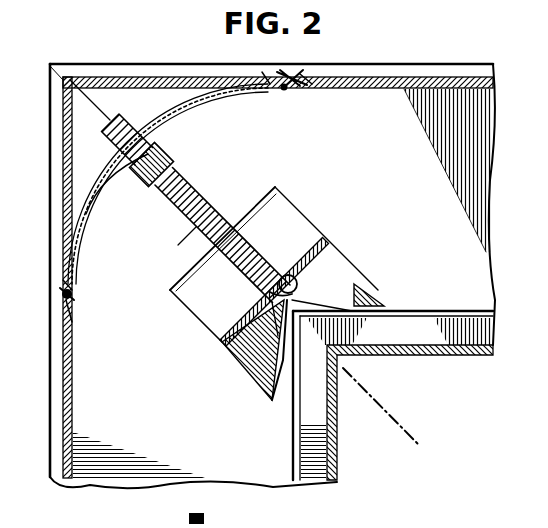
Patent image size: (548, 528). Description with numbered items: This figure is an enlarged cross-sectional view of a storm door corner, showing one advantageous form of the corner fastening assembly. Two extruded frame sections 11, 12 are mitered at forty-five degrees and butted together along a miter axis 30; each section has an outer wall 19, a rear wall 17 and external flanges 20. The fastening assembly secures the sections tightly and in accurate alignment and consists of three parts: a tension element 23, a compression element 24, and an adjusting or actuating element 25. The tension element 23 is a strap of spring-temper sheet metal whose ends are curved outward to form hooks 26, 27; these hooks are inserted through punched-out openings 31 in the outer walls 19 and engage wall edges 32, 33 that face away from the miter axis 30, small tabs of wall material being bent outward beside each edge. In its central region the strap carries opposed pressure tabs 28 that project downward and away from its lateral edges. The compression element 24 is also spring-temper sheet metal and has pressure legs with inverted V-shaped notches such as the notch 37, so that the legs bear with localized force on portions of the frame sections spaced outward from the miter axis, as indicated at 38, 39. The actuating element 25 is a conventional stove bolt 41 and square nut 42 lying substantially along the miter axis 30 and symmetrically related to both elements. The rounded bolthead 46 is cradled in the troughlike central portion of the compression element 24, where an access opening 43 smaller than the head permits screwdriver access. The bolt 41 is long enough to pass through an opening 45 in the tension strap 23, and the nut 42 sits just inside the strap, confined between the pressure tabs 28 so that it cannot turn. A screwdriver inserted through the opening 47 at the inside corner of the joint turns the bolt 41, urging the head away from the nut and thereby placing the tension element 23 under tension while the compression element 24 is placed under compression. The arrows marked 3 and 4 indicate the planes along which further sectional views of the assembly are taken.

The section line 3- 3 is at (32, 52).
The section line 4- 4 is at (228, 208).
The frame section 11 is at (352, 172).
The frame section 12 is at (140, 390).
The rear wall 17 is at (474, 267).
The outer wall 19 is at (73, 411).
The external flange 20 is at (432, 75).
The tension element 23 is at (203, 101).
The compression element 24 is at (333, 269).
The actuating element 25 is at (199, 182).
The hook 26 is at (66, 296).
The hook 27 is at (283, 87).
The pressure tab 28 is at (132, 190).
The miter axis 30 is at (398, 418).
The opening 31 is at (307, 71).
The wall edge 32 is at (63, 287).
The wall edge 33 is at (265, 73).
The inverted V-shaped notch 37 is at (292, 331).
The bearing portion 38 is at (273, 402).
The bearing portion 39 is at (382, 302).
The stove bolt 41 is at (192, 221).
The square nut 42 is at (168, 150).
The access opening 43 is at (297, 283).
The opening 45 is at (126, 155).
The bolthead 46 is at (270, 292).
The opening 47 is at (348, 353).